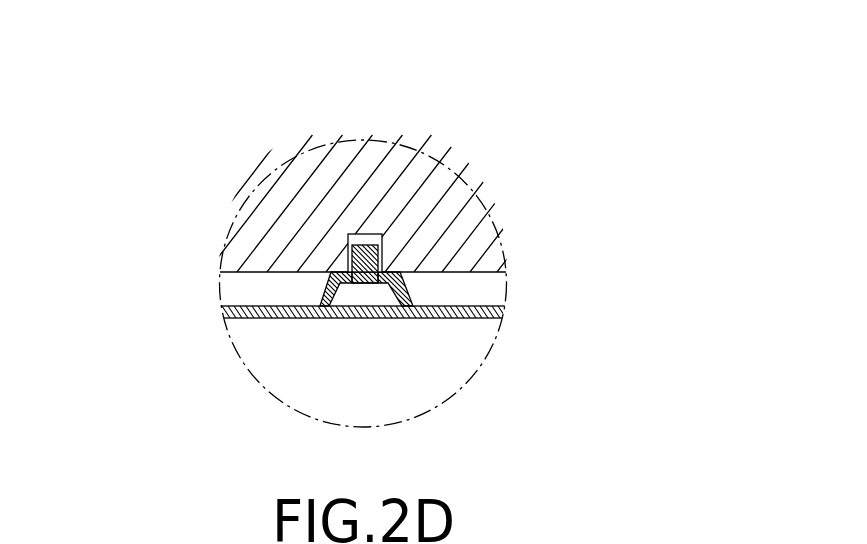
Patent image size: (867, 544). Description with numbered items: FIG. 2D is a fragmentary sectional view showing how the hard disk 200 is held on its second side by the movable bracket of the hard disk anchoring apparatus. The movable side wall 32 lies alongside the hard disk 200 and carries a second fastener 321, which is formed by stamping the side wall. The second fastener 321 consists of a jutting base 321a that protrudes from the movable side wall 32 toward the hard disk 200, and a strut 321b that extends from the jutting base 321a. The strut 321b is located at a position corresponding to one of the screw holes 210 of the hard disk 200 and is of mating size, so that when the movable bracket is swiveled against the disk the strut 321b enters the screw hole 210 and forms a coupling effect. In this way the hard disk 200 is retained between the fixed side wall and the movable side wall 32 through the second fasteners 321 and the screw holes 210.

The hard disk 200 is at (476, 212).
The screw hole 210 is at (373, 243).
The movable side wall 32 is at (480, 318).
The second fastener 321 is at (255, 191).
The jutting base 321a is at (323, 297).
The strut 321b is at (349, 253).